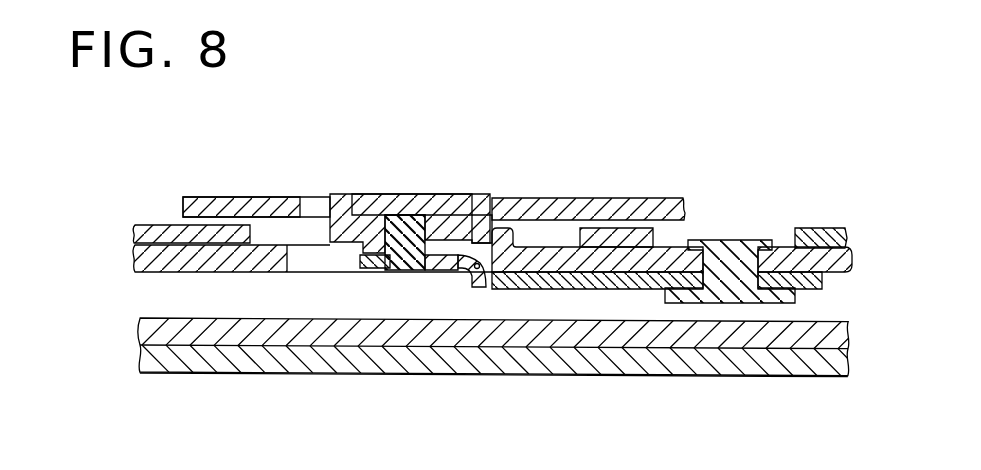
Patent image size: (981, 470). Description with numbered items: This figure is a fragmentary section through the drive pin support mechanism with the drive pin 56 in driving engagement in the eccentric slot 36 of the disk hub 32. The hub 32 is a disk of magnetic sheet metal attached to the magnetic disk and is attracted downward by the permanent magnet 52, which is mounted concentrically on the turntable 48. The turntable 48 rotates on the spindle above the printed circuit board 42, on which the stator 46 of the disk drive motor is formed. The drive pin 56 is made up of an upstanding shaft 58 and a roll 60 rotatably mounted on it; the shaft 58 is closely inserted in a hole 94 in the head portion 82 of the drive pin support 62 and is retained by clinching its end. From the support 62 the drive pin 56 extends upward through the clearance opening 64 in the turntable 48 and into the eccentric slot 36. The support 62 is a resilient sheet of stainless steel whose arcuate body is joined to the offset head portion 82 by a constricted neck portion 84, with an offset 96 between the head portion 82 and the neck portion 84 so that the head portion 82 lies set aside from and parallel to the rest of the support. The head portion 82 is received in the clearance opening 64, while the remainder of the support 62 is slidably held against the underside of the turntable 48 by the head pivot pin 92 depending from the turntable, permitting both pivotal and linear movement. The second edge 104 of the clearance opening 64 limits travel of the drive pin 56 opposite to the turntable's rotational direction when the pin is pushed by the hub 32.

The hub 32 is at (618, 198).
The eccentric opening 36 is at (304, 197).
The printed circuit board 42 is at (695, 366).
The stator 46 is at (785, 340).
The turntable 48 is at (782, 248).
The permanent magnet 52 is at (148, 225).
The drive pin 56 is at (410, 182).
The shaft 58 is at (437, 194).
The roll 60 is at (349, 194).
The drive pin support 62 is at (601, 306).
The clearance opening 64 is at (291, 272).
The head portion 82 is at (370, 268).
The neck portion 84 is at (535, 289).
The head pivot pin 92 is at (738, 240).
The hole 94 is at (426, 271).
The offset 96 is at (483, 288).
The second edge 104 is at (485, 196).